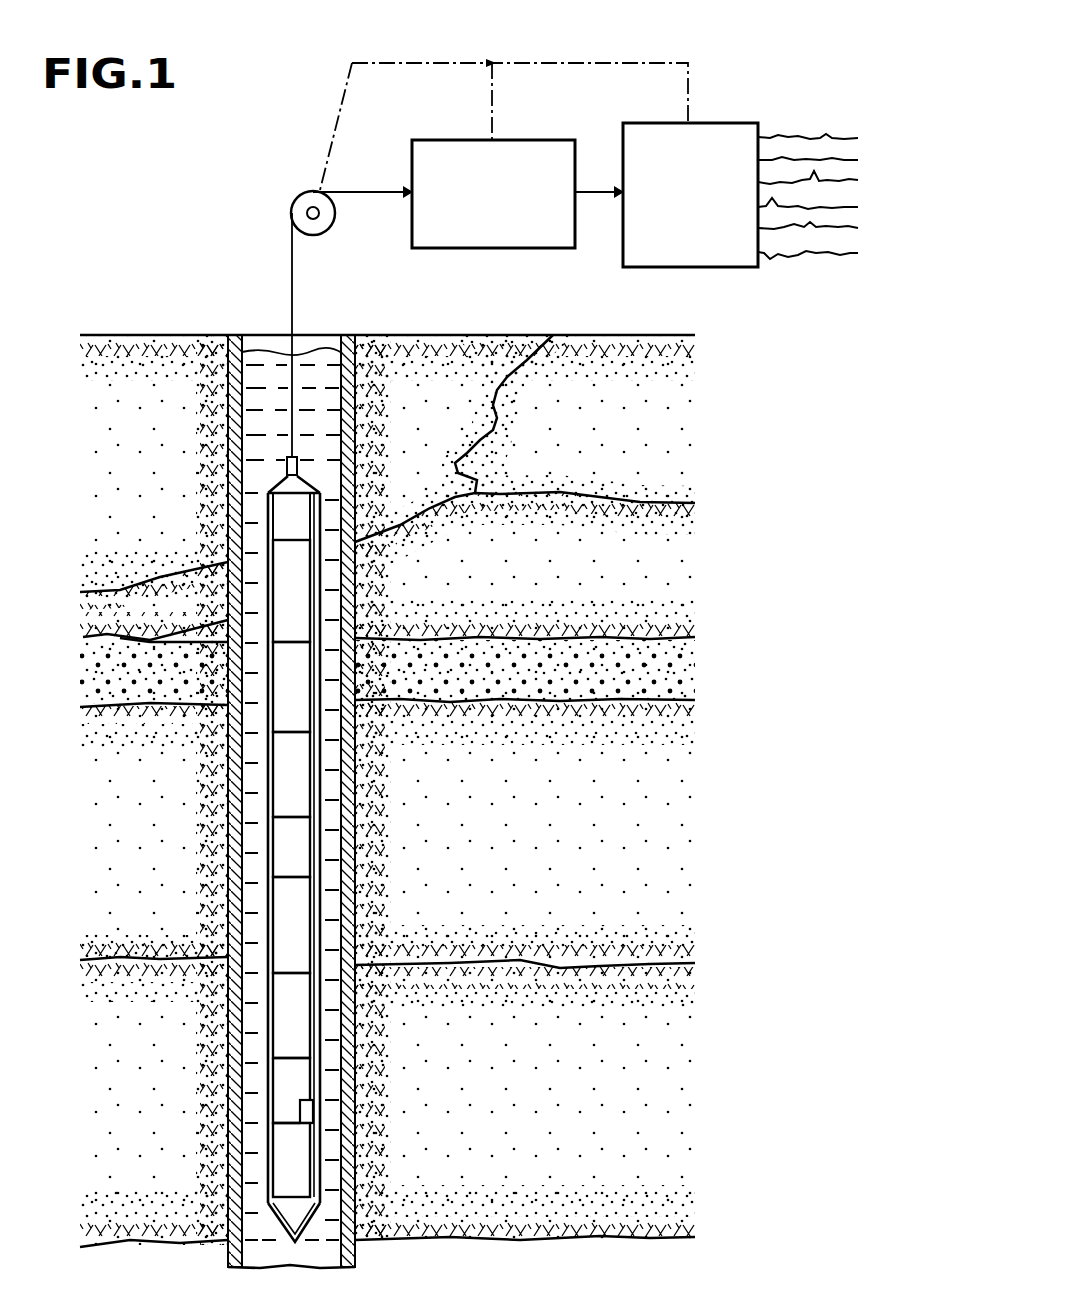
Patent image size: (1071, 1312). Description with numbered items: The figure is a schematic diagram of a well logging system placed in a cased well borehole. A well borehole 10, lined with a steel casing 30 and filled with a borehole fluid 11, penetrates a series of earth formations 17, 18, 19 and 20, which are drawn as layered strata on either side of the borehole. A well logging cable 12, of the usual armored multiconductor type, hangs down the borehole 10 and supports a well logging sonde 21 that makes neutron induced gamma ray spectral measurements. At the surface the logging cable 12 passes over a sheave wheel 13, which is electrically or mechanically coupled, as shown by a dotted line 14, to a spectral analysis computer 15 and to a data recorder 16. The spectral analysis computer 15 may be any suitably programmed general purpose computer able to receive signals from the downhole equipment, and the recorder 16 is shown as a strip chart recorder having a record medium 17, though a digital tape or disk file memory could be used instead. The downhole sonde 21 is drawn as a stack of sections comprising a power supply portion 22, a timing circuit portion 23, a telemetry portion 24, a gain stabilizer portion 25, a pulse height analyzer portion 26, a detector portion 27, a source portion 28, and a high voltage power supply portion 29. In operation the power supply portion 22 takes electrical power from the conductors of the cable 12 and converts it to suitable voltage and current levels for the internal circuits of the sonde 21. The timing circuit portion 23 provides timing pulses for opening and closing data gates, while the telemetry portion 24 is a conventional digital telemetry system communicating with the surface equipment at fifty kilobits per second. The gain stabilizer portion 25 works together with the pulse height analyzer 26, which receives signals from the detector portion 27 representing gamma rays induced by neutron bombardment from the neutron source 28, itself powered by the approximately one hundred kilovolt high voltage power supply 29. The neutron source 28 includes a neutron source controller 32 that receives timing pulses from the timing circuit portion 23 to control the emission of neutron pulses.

The well borehole 10 is at (266, 303).
The borehole fluid 11 is at (325, 400).
The well logging cable 12 is at (293, 308).
The sheave wheel 13 is at (303, 198).
The dotted line 14 is at (467, 63).
The spectral analysis computer 15 is at (538, 140).
The data recorder 16 is at (727, 123).
The earth formation / record medium 17 is at (792, 253).
The earth formation 18 is at (155, 682).
The earth formation 19 is at (152, 848).
The earth formation 20 is at (163, 1115).
The well logging sonde 21 is at (314, 514).
The power supply portion 22 is at (310, 593).
The timing circuit portion 23 is at (310, 688).
The telemetry portion 24 is at (308, 788).
The gain stabilizer portion 25 is at (308, 862).
The pulse height analyzer portion 26 is at (308, 928).
The detector portion 27 is at (308, 1028).
The source portion 28 is at (305, 1080).
The high voltage power supply portion 29 is at (314, 1185).
The steel casing 30 is at (227, 382).
The neutron source controller 32 is at (313, 1112).